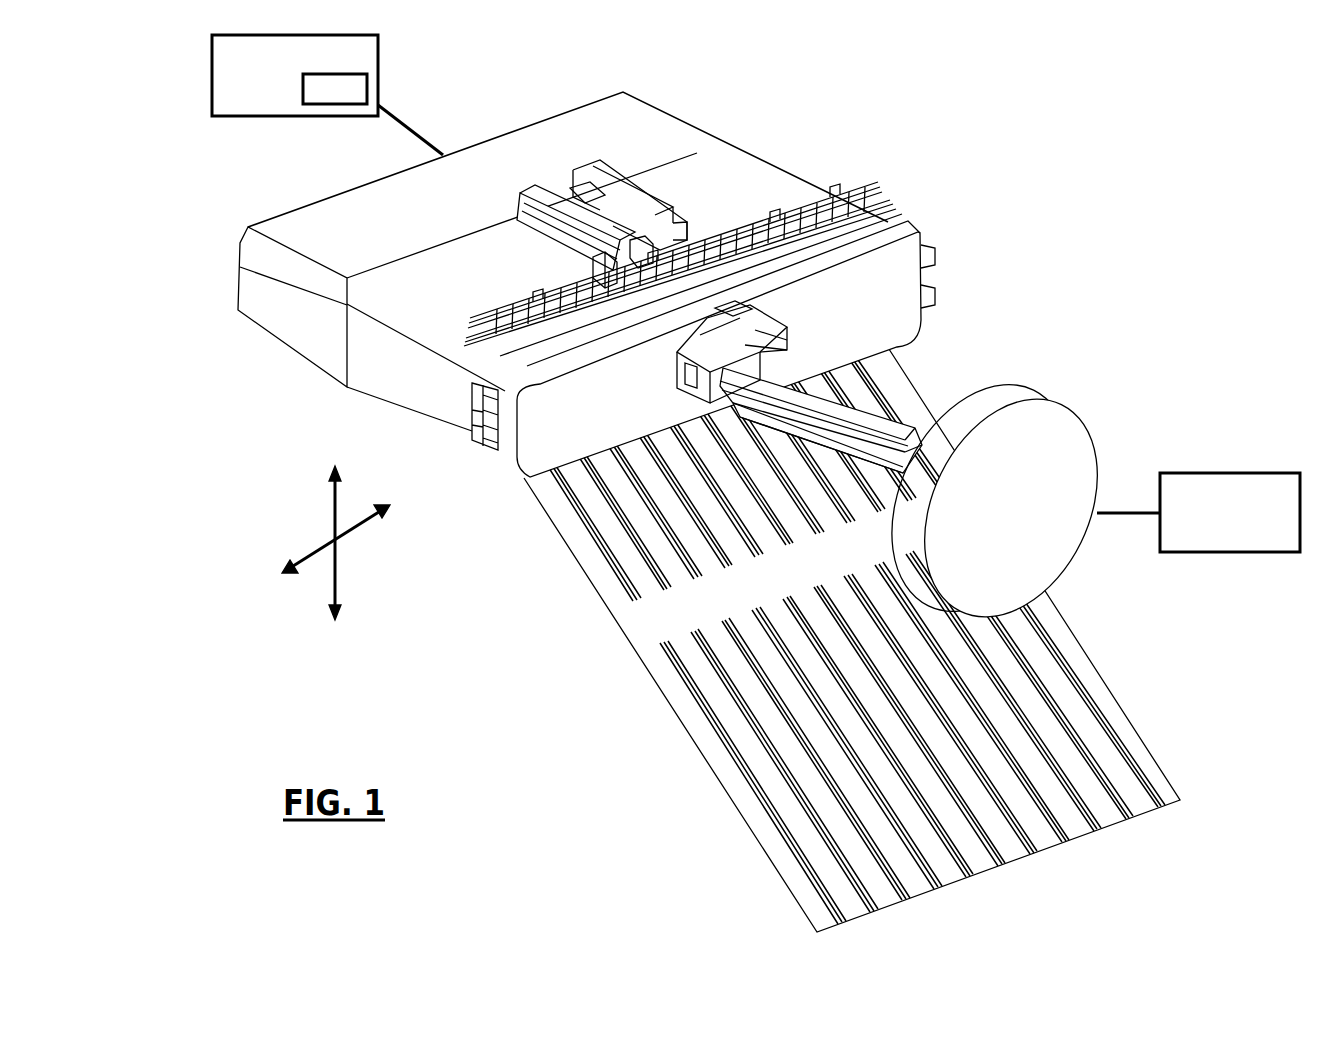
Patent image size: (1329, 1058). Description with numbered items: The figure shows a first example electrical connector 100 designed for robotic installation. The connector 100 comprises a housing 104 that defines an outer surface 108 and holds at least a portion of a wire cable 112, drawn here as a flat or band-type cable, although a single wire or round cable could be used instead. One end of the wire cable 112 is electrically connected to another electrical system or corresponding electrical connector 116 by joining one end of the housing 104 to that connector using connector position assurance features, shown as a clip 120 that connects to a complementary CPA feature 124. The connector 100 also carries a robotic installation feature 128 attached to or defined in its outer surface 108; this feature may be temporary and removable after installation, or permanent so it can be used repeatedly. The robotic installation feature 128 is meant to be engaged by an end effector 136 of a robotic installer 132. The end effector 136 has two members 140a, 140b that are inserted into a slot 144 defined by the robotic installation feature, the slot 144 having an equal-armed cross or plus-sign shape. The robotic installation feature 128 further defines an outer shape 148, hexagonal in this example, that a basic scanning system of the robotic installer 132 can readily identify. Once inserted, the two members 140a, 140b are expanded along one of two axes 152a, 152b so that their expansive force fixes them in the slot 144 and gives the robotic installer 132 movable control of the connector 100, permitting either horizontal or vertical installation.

The electrical connector 100 is at (1047, 185).
The housing 104 is at (243, 265).
The outer surface 108 is at (907, 243).
The wire cable 112 is at (706, 752).
The corresponding electrical connector 116 is at (212, 78).
The clip 120 is at (532, 188).
The CPA feature 124 is at (368, 96).
The robotic installation feature 128 is at (660, 383).
The robotic installer 132 is at (1233, 473).
The end effector 136 is at (1010, 383).
The first member 140a is at (907, 421).
The second member 140b is at (902, 473).
The slot 144 is at (747, 343).
The outer shape 148 is at (790, 343).
The first axis 152a is at (360, 527).
The second axis 152b is at (331, 507).